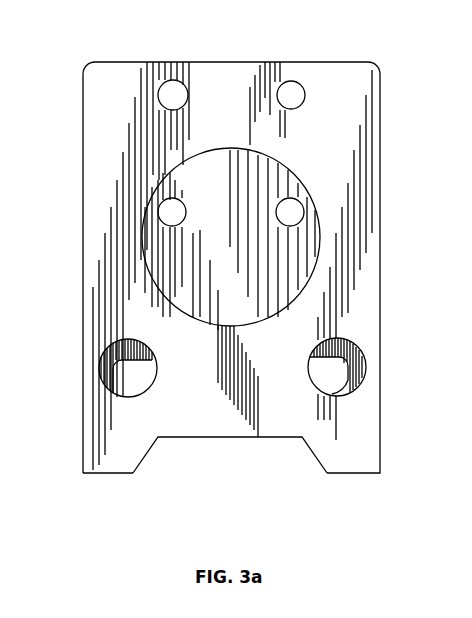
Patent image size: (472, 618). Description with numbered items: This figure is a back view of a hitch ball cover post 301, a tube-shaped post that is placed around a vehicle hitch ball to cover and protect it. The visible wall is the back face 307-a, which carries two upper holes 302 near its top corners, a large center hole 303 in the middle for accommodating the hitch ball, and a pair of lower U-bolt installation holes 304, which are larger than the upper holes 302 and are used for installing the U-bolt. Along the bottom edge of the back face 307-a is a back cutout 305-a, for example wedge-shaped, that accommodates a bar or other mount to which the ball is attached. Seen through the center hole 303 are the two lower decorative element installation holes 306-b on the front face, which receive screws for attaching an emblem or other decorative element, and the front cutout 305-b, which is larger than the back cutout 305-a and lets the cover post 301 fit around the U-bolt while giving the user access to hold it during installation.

The hitch ball cover post 301 is at (410, 41).
The upper holes 302 is at (187, 92).
The center hole 303 is at (283, 168).
The lower U-bolt installation holes 304 is at (107, 346).
The back cutout 305-a is at (273, 449).
The front cutout 305-b is at (327, 368).
The lower decorative element installation holes 306-b is at (183, 202).
The back face 307-a is at (198, 417).